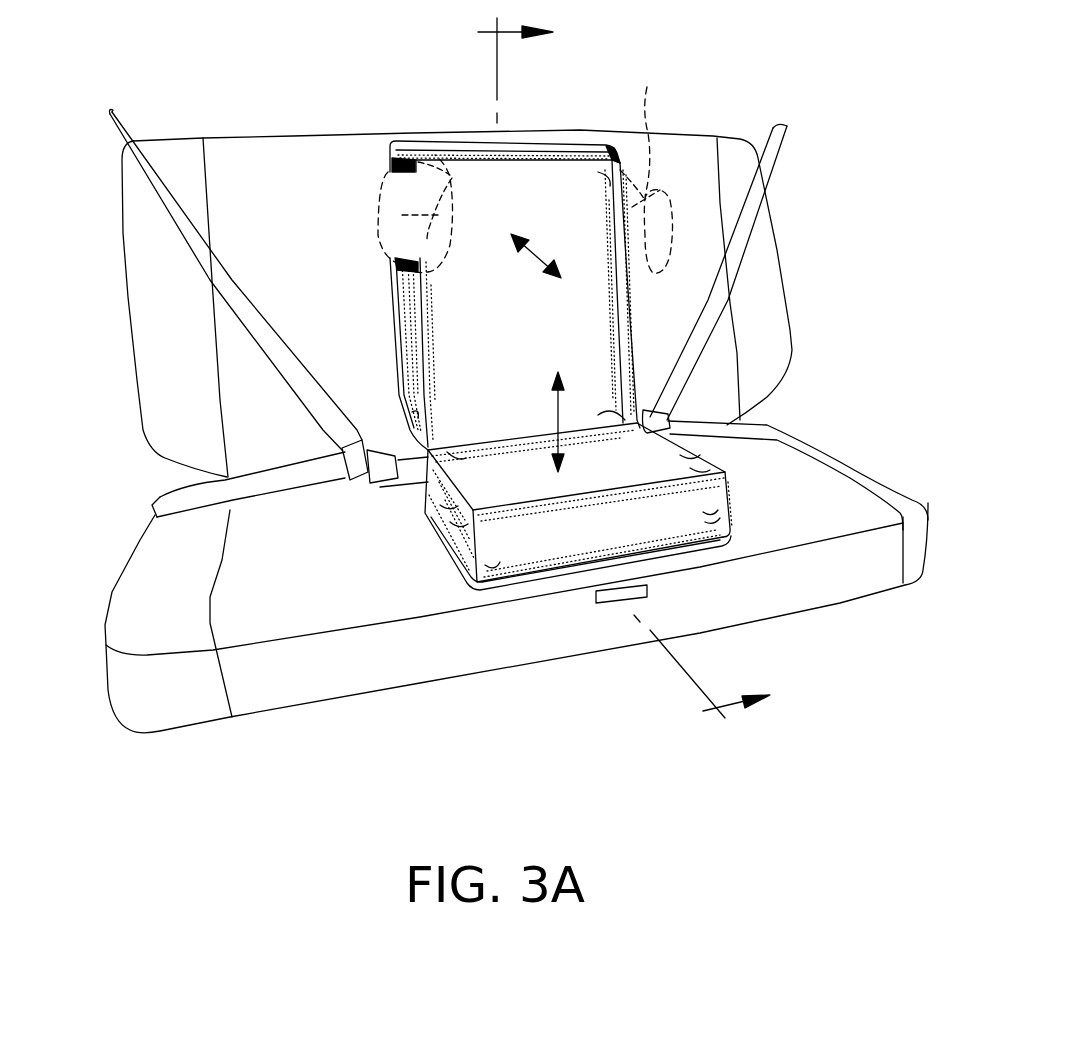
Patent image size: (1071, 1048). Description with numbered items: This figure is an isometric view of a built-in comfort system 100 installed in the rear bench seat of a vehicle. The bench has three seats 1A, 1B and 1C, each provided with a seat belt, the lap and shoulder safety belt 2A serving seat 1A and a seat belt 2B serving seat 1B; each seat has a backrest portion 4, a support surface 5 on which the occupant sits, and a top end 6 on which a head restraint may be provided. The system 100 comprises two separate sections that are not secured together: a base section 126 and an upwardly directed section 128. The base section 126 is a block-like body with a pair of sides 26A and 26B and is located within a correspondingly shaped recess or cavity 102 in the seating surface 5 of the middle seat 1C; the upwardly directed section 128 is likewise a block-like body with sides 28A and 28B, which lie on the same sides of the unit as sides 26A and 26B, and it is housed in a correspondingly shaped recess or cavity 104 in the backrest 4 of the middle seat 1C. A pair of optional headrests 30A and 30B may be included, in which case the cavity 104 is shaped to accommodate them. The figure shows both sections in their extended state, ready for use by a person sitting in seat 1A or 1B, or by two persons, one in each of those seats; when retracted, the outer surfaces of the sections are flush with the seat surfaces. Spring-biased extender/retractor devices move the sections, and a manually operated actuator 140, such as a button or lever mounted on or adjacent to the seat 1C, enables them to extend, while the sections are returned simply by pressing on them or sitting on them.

The seat 1A is at (257, 178).
The seat 1B is at (695, 160).
The middle seat 1C is at (578, 606).
The lap and shoulder safety belt 2A is at (228, 320).
The right shoulder seat belt 2B is at (758, 215).
The backrest portion 4 is at (385, 270).
The support surface 5 is at (516, 618).
The top end 6 is at (370, 133).
The side 26A is at (440, 527).
The side 26B is at (683, 487).
The side 28A is at (413, 352).
The side 28B is at (632, 307).
The headrest 30A is at (444, 153).
The headrest 30B is at (647, 87).
The built-in comfort system 100 is at (466, 368).
The recess or cavity 102 is at (645, 579).
The recess or cavity 104 is at (466, 265).
The base section 126 is at (607, 472).
The upwardly directed section 128 is at (600, 357).
The manually operated actuator 140 is at (620, 600).